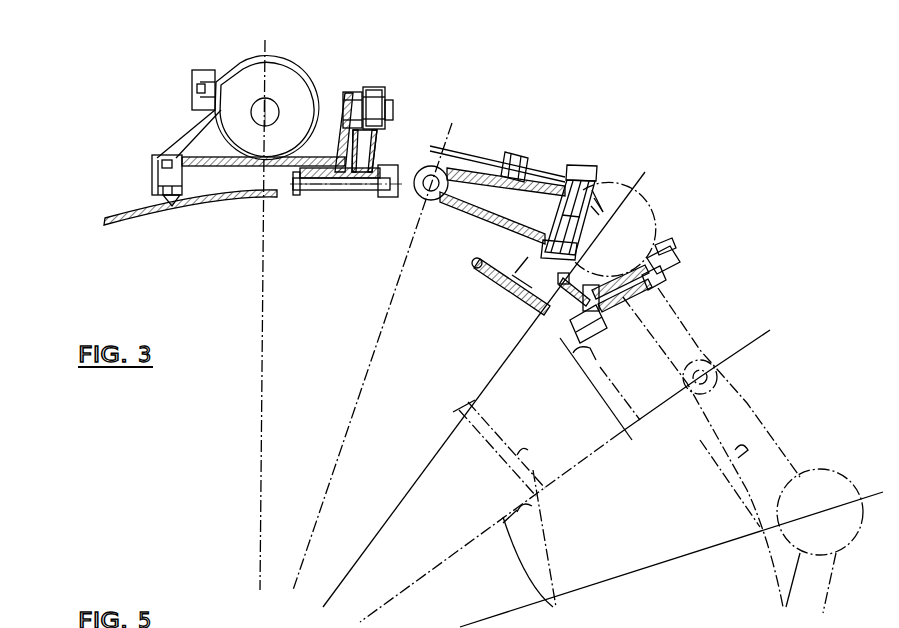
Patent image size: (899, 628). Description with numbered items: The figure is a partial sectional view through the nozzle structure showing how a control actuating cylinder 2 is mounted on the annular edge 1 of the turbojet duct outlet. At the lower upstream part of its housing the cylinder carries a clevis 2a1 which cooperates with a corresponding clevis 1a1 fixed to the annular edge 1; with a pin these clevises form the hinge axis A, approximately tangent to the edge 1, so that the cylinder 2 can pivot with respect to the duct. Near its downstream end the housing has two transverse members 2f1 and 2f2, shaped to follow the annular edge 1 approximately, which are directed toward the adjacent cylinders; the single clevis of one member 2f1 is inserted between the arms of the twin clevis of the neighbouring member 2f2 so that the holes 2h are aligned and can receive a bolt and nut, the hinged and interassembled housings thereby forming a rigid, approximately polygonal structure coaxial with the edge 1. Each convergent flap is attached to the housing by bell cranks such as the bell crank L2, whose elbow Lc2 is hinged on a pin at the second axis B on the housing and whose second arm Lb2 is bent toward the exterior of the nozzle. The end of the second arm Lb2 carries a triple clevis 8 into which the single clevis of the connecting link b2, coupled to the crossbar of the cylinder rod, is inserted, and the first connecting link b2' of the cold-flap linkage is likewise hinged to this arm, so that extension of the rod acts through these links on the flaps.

The control actuating cylinder 2 is at (243, 62).
The clevis 2a1 is at (209, 148).
The hinge axis A is at (152, 182).
The annular edge 1 is at (197, 198).
The clevis 1a1 is at (170, 206).
The connecting link b2 is at (334, 82).
The triple clevis 8 is at (358, 86).
The first connecting link b2' is at (394, 88).
The second arm Lb2 is at (381, 138).
The bell crank L2 is at (338, 148).
The second axis B is at (322, 186).
The elbow Lc2 is at (395, 190).
The holes 2h is at (441, 200).
The transverse member 2f2 is at (413, 160).
The transverse member 2f1 is at (541, 180).